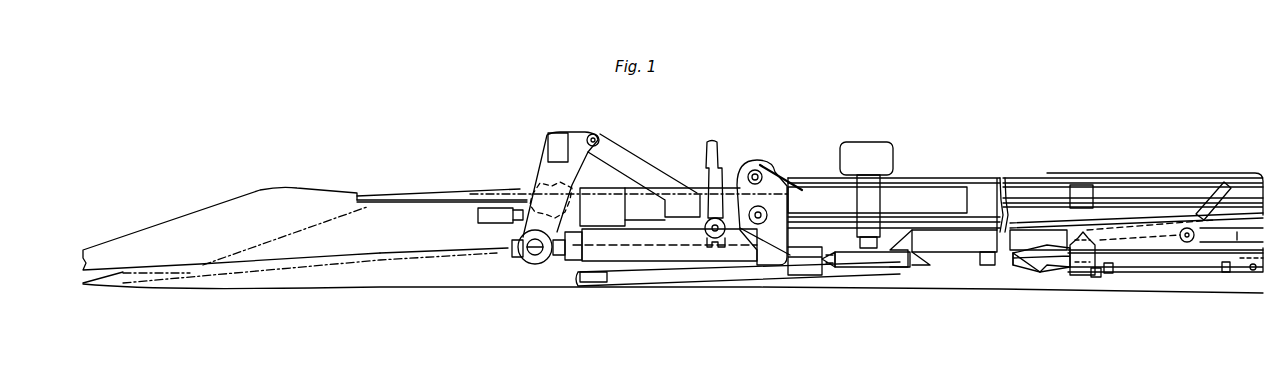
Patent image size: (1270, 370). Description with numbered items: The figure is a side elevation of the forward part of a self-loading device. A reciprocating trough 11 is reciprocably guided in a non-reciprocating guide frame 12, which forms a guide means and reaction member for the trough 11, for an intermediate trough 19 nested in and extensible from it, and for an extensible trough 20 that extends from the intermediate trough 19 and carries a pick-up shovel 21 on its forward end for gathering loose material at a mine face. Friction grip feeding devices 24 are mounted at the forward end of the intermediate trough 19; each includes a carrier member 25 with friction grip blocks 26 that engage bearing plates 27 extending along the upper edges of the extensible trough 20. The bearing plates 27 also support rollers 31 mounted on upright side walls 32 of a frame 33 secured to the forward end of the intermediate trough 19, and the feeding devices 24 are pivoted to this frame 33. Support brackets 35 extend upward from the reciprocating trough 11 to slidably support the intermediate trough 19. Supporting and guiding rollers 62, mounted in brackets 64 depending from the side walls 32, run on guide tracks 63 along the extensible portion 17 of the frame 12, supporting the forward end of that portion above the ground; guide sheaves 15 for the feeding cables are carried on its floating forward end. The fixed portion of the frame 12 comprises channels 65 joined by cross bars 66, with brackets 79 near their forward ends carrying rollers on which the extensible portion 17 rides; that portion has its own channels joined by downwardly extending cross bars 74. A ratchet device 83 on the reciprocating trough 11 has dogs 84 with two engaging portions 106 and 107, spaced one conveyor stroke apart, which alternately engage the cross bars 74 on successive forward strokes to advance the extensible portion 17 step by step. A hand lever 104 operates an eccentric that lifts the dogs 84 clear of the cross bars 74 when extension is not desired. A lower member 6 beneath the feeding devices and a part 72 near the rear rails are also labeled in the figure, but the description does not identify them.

The frame bar 6 is at (655, 278).
The reciprocating trough 11 is at (1123, 210).
The guide frame 12 is at (1207, 271).
The guide sheaves 15 is at (580, 274).
The extensible portion 17 is at (953, 253).
The intermediate trough 19 is at (1023, 198).
The extensible trough 20 is at (443, 250).
The shovel 21 is at (207, 208).
The friction grip feeding devices 24 is at (647, 163).
The carrier member 25 is at (540, 160).
The friction grip blocks 26 is at (528, 195).
The bearing plates 27 is at (440, 195).
The rollers 31 is at (757, 176).
The upright side walls 32 is at (741, 165).
The frame 33 is at (810, 200).
The support brackets 35 is at (1092, 178).
The supporting and guiding rollers 62 is at (842, 268).
The guide tracks 63 is at (890, 264).
The brackets 64 is at (815, 271).
The channels 65 is at (1173, 258).
The cross bars 66 is at (1253, 271).
The cam block 72 is at (1093, 235).
The cross bars 74 is at (1095, 278).
The brackets 79 is at (1017, 268).
The ratchet device 83 is at (1052, 273).
The dogs 84 is at (1037, 271).
The hand lever 104 is at (1225, 187).
The engaging portion 106 is at (1040, 277).
The engaging portion 107 is at (1113, 278).